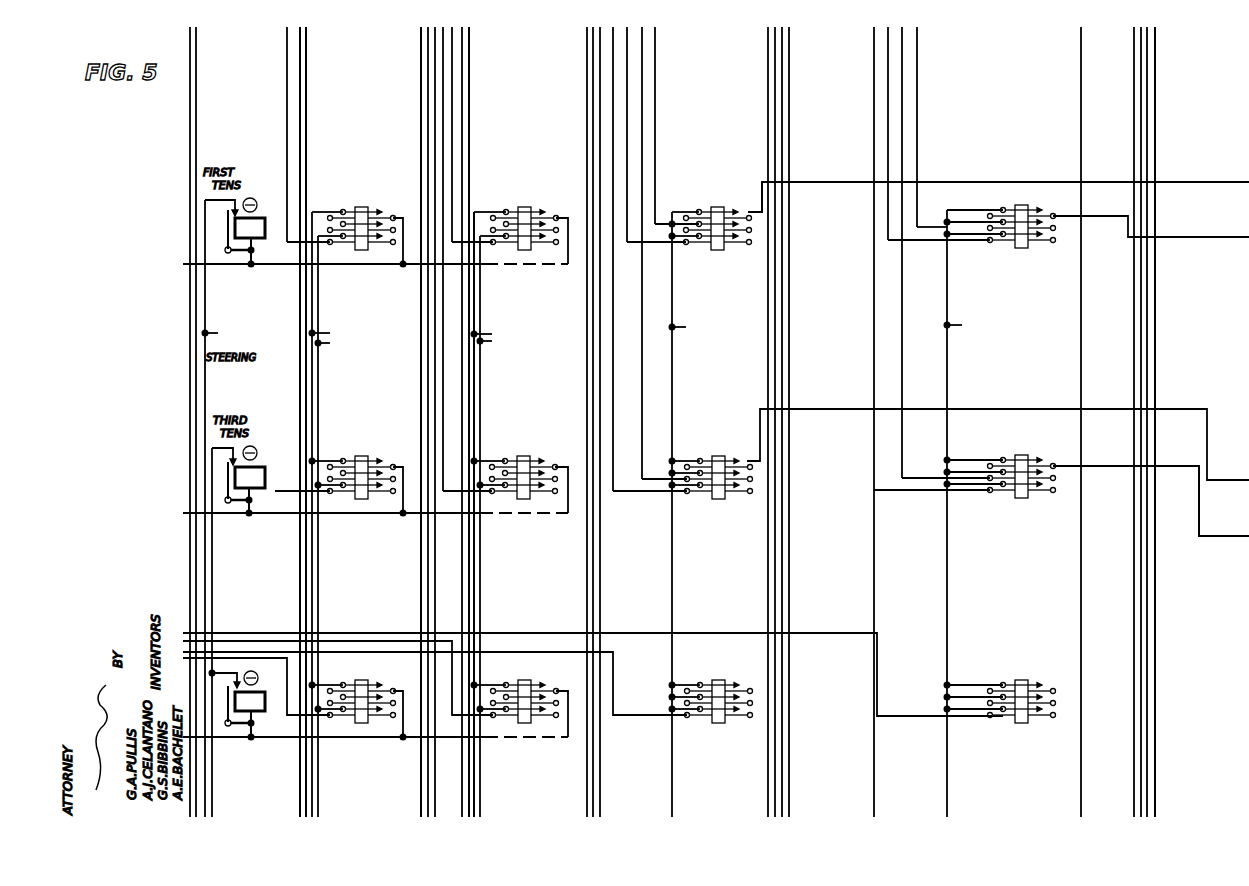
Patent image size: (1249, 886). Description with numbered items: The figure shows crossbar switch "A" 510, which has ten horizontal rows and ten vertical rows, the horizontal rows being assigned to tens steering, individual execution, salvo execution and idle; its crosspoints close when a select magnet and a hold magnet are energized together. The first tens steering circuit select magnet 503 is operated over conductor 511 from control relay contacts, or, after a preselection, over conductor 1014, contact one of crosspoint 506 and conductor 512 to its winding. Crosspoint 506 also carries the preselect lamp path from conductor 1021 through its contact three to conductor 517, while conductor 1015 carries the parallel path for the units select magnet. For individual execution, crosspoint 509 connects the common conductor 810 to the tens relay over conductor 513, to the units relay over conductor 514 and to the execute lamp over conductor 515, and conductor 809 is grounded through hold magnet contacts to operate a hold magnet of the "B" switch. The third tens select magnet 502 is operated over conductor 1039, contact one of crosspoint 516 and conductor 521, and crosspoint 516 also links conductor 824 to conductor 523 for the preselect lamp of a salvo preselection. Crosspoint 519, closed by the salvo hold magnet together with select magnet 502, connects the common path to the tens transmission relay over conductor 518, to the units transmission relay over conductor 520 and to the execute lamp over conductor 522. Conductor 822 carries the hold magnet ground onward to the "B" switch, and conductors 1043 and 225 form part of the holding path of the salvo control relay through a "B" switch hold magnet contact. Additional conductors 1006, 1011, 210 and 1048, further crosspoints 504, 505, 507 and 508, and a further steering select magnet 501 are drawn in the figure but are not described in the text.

The conductor 1006 is at (197, 52).
The conductor 1011 is at (307, 47).
The conductor 517 is at (288, 77).
The conductor 210 is at (420, 47).
The conductor 523 is at (470, 47).
The conductor 514 is at (656, 50).
The conductor 515 is at (628, 72).
The conductor 522 is at (873, 47).
The conductor 520 is at (903, 47).
The conductor 822 is at (1080, 44).
The conductor 1043 is at (1140, 47).
The conductor 225 is at (1156, 50).
The conductor 513 is at (1197, 181).
The crosspoint 506 is at (361, 206).
The conductor 511 is at (206, 270).
The first tens steering circuit select magnet 503 is at (258, 240).
The conductor 512 is at (343, 267).
The conductor 1021 is at (319, 316).
The crosspoint 509 is at (717, 206).
The crossbar switch A 510 is at (1007, 464).
The switch contact set 505 is at (361, 455).
The third tens select magnet 502 is at (258, 490).
The crosspoint 516 is at (523, 455).
The conductor 521 is at (540, 516).
The conductor 1039 is at (475, 573).
The switch contact set 508 is at (718, 455).
The crosspoint 519 is at (1021, 454).
The conductor 518 is at (1227, 535).
The switch contact set 504 is at (361, 679).
The steering marker SM6 501 is at (259, 712).
The conductor 1048 is at (192, 786).
The conductor 1015 is at (299, 803).
The conductor 1014 is at (307, 808).
The conductor 824 is at (470, 807).
The switch contact set 507 is at (718, 679).
The conductor 810 is at (673, 806).
The conductor 809 is at (790, 806).